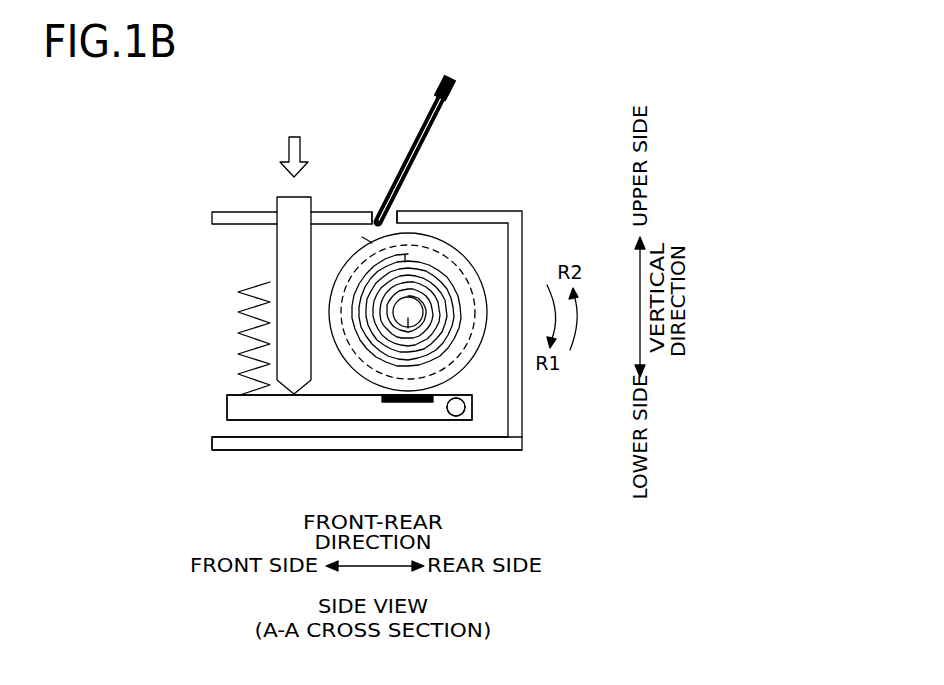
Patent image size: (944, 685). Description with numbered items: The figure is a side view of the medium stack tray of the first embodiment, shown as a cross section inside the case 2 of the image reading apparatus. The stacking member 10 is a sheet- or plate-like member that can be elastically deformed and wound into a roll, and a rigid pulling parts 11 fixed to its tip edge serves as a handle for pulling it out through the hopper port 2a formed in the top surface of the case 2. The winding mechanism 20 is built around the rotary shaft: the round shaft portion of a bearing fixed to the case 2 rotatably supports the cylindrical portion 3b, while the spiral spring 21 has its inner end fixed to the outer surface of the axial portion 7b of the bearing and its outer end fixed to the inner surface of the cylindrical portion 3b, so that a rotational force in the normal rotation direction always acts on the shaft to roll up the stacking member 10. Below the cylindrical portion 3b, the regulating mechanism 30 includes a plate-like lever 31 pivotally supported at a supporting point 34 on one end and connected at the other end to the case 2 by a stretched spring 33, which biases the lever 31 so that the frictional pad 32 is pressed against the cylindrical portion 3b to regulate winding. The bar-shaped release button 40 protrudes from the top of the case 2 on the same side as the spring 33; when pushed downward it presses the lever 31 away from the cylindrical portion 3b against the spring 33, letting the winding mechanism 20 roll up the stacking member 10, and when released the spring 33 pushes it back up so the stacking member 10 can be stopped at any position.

The case 2 is at (234, 212).
The hopper port 2a is at (374, 218).
The cylindrical portion 3b is at (362, 234).
The axial portion 7b is at (416, 305).
The stacking member 10 is at (421, 126).
The pulling parts 11 is at (446, 75).
The winding mechanism 20 is at (455, 239).
The spiral spring 21 is at (377, 337).
The regulating mechanism 30 is at (415, 421).
The lever 31 is at (456, 416).
The frictional pad 32 is at (392, 403).
The spring 33 is at (262, 397).
The supporting point 34 is at (465, 407).
The release button 40 is at (311, 200).